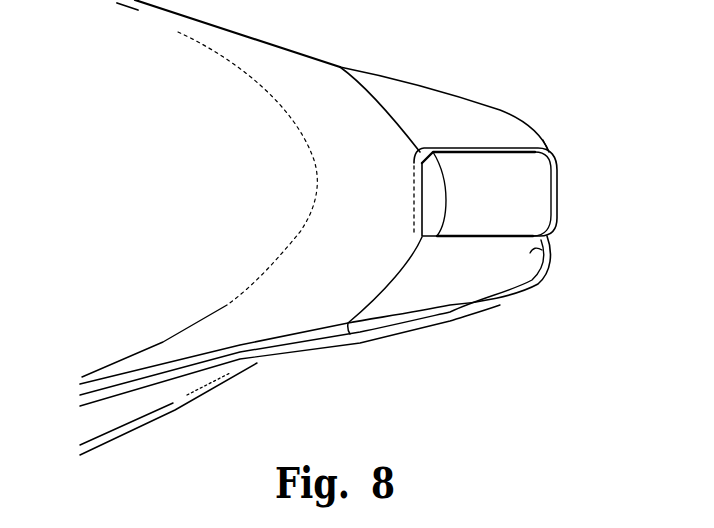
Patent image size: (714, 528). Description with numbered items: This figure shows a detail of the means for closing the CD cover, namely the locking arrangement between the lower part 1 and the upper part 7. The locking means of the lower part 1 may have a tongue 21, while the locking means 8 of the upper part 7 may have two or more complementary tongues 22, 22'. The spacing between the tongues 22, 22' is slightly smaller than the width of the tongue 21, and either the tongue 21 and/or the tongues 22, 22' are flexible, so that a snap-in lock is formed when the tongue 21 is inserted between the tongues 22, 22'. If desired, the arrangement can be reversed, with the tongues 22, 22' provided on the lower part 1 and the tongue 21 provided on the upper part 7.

The lower part 1 is at (173, 398).
The upper part 7 is at (240, 247).
The locking means 8 is at (372, 265).
The tongue 21 is at (545, 192).
The complementary tongue 22 is at (319, 321).
The complementary tongue 22' is at (457, 107).